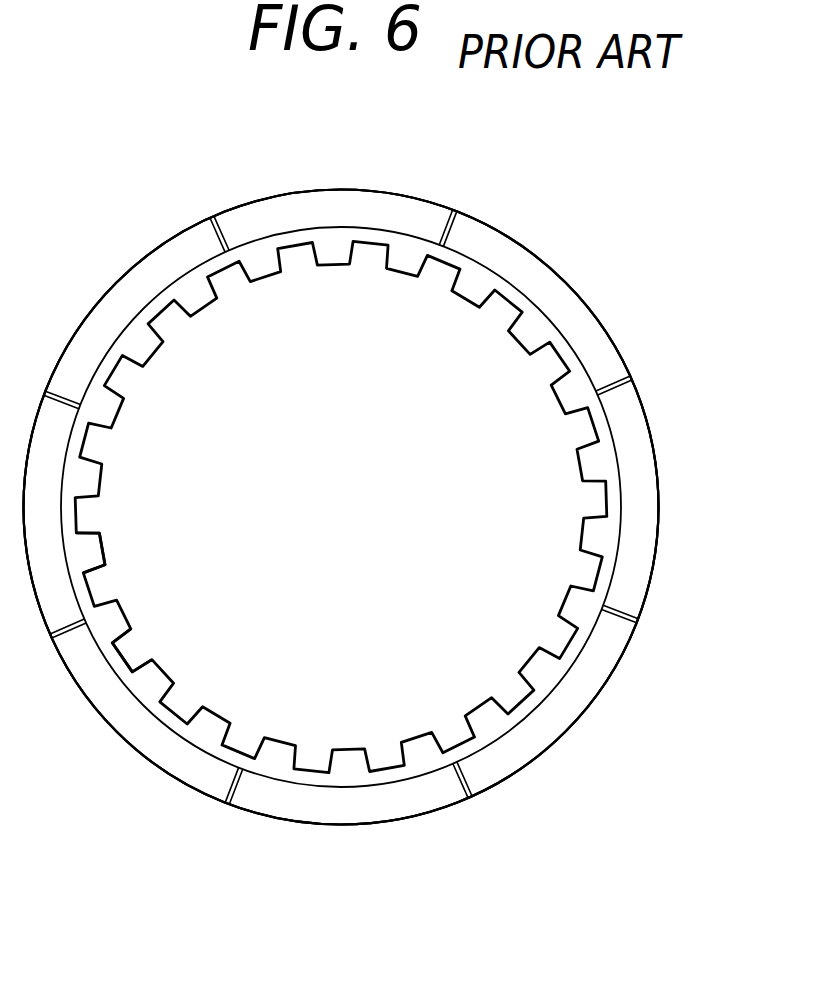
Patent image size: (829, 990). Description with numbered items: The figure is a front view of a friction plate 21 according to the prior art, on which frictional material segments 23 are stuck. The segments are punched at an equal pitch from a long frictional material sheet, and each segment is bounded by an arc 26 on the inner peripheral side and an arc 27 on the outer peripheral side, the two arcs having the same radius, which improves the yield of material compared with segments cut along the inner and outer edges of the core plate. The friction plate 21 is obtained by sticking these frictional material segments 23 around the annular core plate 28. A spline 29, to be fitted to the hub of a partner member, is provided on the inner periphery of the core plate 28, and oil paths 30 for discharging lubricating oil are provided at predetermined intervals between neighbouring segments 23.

The friction plate 21 is at (583, 149).
The frictional material segments 23 is at (352, 202).
The arc 26 is at (180, 275).
The arc 27 is at (112, 285).
The core plate 28 is at (78, 552).
The spline 29 is at (117, 652).
The oil paths 30 is at (633, 380).